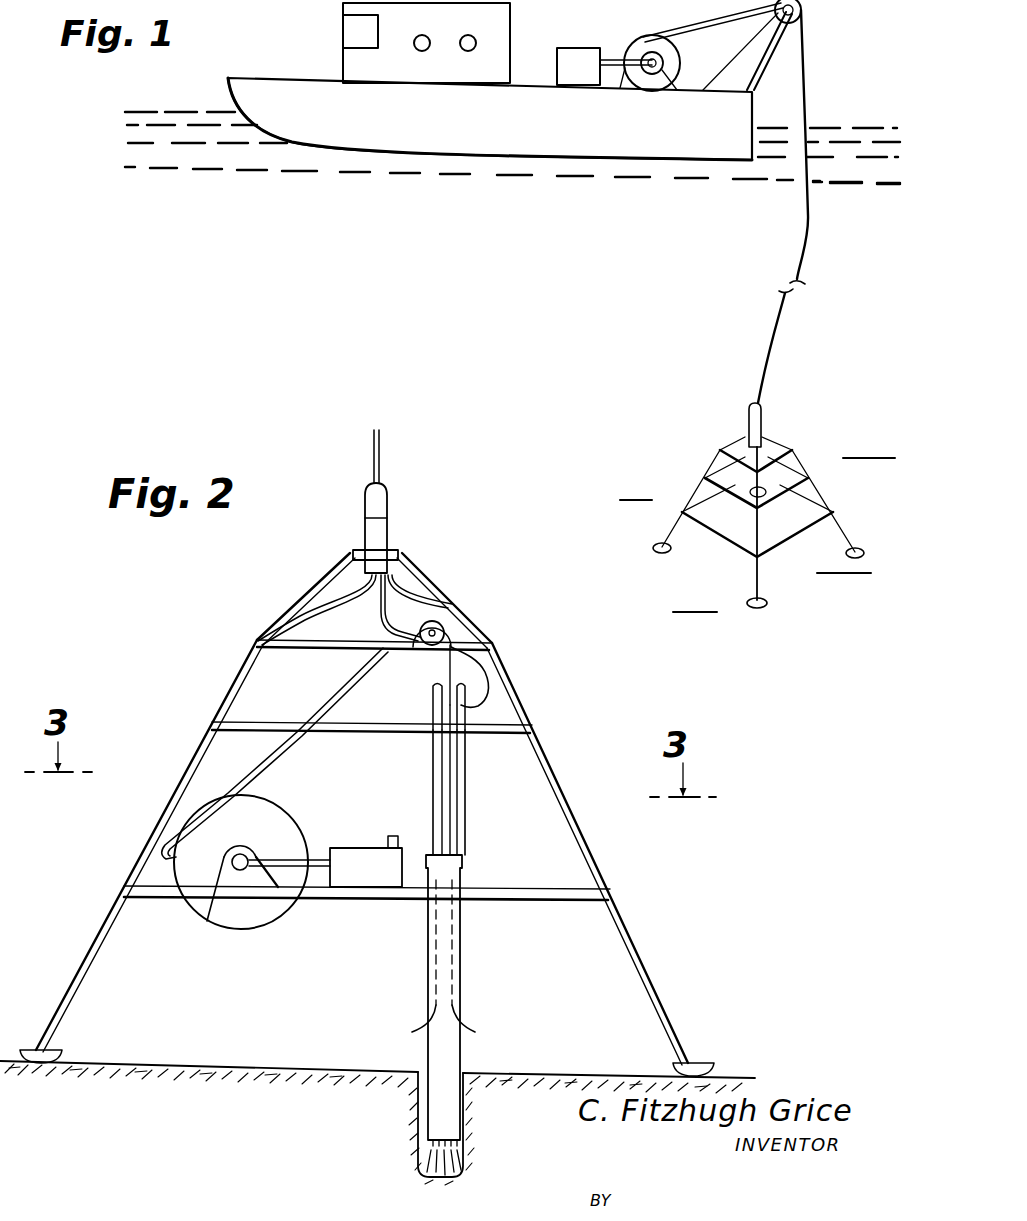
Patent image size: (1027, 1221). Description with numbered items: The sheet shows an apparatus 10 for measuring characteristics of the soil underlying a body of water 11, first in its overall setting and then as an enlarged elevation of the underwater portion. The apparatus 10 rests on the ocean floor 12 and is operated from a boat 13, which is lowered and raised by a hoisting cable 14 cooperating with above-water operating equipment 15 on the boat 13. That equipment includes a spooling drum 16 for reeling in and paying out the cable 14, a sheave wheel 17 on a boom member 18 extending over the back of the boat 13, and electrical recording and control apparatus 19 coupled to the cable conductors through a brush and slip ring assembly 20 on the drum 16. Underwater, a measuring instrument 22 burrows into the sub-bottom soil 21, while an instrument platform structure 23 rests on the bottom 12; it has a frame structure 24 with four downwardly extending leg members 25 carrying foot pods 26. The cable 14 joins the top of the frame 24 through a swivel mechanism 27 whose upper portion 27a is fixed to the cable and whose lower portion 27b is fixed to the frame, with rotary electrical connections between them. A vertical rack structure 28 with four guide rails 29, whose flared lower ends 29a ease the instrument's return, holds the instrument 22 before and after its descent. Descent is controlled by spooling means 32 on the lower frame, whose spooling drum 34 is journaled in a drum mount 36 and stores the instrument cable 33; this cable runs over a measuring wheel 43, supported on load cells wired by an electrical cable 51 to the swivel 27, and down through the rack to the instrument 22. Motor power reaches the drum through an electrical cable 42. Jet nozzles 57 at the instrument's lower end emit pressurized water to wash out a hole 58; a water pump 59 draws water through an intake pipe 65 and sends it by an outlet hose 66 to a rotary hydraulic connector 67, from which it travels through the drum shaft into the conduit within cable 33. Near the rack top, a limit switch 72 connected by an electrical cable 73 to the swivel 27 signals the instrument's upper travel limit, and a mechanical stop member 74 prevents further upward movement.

In FIG. 1, the apparatus 10 is at (711, 438).
In FIG. 2, the apparatus 10 is at (310, 589).
In FIG. 1, the body of water 11 is at (833, 128).
In FIG. 1, the ocean floor 12 is at (873, 458).
In FIG. 2, the ocean floor 12 is at (200, 1067).
In FIG. 1, the boat 13 is at (288, 78).
In FIG. 1, the hoisting cable 14 is at (805, 47).
In FIG. 2, the hoisting cable 14 is at (383, 455).
In FIG. 1, the above-water operating equipment 15 is at (616, 38).
In FIG. 1, the spooling drum 16 is at (672, 46).
In FIG. 1, the sheave wheel 17 is at (805, 5).
In FIG. 1, the boom member 18 is at (750, 56).
In FIG. 1, the electrical recording and control apparatus 19 is at (577, 60).
In FIG. 1, the brush and slip ring assembly 20 is at (680, 63).
In FIG. 2, the sub-bottom soil 21 is at (390, 1125).
In FIG. 2, the measuring instrument 22 is at (425, 1052).
In FIG. 2, the instrument platform structure 23 is at (617, 890).
In FIG. 2, the frame structure 24 is at (597, 858).
In FIG. 2, the leg members 25 is at (84, 982).
In FIG. 2, the foot pods 26 is at (58, 1051).
In FIG. 2, the swivel mechanism 27 is at (361, 508).
In FIG. 2, the upper portion of swivel mechanism 27a is at (388, 498).
In FIG. 2, the lower portion of swivel mechanism 27b is at (372, 531).
In FIG. 2, the vertical rack structure 28 is at (430, 754).
In FIG. 2, the vertical guide rails 29 is at (434, 772).
In FIG. 2, the lower ends of guide rails 29a is at (478, 1028).
In FIG. 2, the spooling means 32 is at (246, 824).
In FIG. 2, the instrument cable 33 is at (345, 686).
In FIG. 2, the spooling drum 34 is at (292, 806).
In FIG. 2, the drum mount 36 is at (234, 856).
In FIG. 2, the electrical cable 42 is at (337, 596).
In FIG. 2, the measuring wheel 43 is at (447, 626).
In FIG. 2, the electrical cable 51 is at (380, 618).
In FIG. 2, the jet nozzles 57 is at (424, 1150).
In FIG. 2, the hole 58 is at (462, 1150).
In FIG. 2, the water pump 59 is at (360, 847).
In FIG. 2, the intake pipe 65 is at (394, 835).
In FIG. 2, the outlet hose 66 is at (299, 846).
In FIG. 2, the rotary hydraulic connector 67 is at (212, 912).
In FIG. 2, the limit switch 72 is at (461, 709).
In FIG. 2, the electrical cable 73 is at (490, 682).
In FIG. 2, the mechanical stop member 74 is at (436, 707).